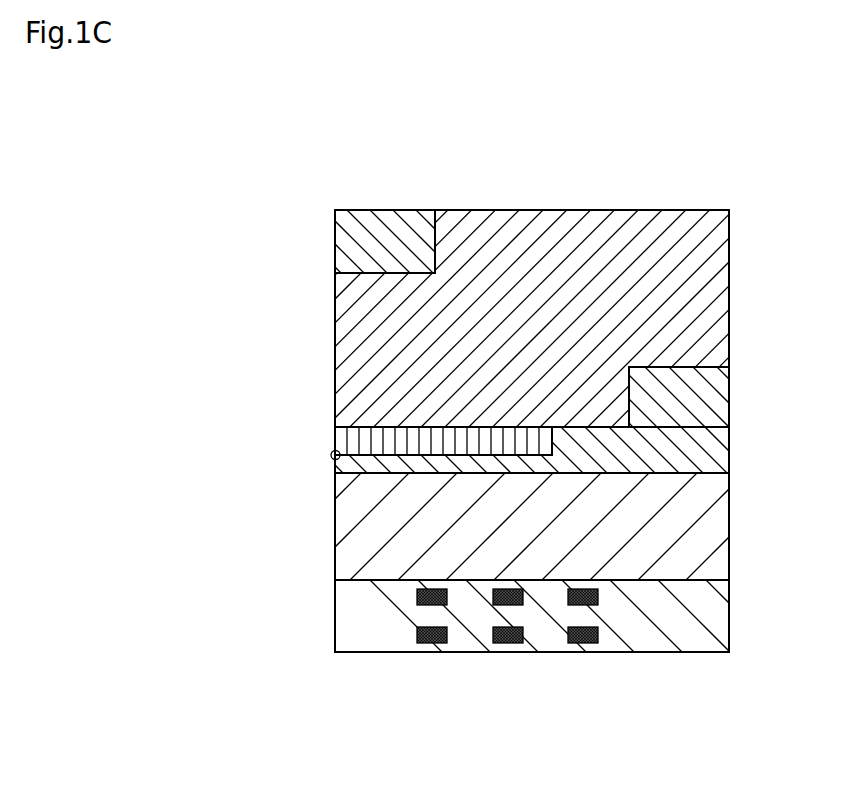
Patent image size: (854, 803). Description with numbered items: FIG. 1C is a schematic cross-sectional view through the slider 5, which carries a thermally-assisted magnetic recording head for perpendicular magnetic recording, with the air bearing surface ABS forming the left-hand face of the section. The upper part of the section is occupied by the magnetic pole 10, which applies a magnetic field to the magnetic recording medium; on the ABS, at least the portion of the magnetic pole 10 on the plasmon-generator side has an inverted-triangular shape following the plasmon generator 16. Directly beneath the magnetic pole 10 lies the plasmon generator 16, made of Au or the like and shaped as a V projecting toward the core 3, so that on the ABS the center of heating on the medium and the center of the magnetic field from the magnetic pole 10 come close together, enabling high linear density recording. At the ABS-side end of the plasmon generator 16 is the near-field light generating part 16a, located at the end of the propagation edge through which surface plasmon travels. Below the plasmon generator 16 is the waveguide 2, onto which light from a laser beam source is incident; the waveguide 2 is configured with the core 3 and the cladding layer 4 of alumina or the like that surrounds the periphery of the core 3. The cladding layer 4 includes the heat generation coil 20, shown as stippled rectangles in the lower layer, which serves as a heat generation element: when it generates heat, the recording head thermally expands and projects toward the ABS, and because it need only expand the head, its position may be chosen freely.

The slider 5 is at (653, 194).
The magnetic pole 10 is at (545, 220).
The waveguide 2 is at (427, 401).
The core 3 is at (655, 488).
The cladding layer 4 is at (718, 400).
The plasmon generator 16 is at (377, 434).
The near-field light generating part 16a is at (330, 457).
The heat generation coil 20 is at (583, 637).
The air bearing surface ABS is at (333, 308).